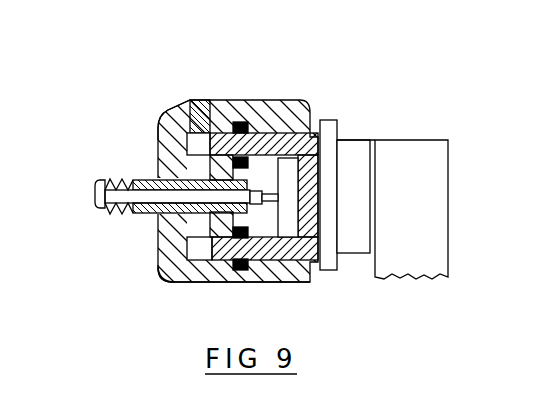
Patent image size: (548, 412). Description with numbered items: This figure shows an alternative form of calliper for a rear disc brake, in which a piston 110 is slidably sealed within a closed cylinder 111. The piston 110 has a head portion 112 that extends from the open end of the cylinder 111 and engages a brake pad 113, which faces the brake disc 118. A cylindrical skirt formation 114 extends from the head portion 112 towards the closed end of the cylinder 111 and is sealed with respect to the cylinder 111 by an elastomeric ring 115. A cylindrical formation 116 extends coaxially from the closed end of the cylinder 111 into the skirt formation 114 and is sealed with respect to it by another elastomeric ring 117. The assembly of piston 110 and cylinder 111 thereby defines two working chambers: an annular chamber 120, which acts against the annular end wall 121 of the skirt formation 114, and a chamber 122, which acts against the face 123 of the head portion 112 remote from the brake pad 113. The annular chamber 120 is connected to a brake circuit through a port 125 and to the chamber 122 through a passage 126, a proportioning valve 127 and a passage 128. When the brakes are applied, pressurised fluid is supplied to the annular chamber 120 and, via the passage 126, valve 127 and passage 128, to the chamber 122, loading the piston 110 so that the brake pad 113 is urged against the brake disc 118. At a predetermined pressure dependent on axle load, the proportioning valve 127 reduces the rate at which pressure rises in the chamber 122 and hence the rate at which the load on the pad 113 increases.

The piston 110 is at (280, 143).
The cylinder 111 is at (267, 133).
The head portion 112 is at (363, 150).
The brake pad 113 is at (348, 243).
The cylindrical skirt formation 114 is at (197, 283).
The elastomeric ring 115 is at (240, 122).
The cylindrical formation 116 is at (215, 224).
The elastomeric ring 117 is at (158, 268).
The brake disc 118 is at (412, 243).
The annular chamber 120 is at (188, 148).
The annular end wall 121 is at (160, 117).
The chamber 122 is at (318, 176).
The face 123 is at (310, 263).
The port 125 is at (193, 101).
The passage 126 is at (160, 176).
The proportioning valve 127 is at (123, 217).
The passage 128 is at (290, 236).